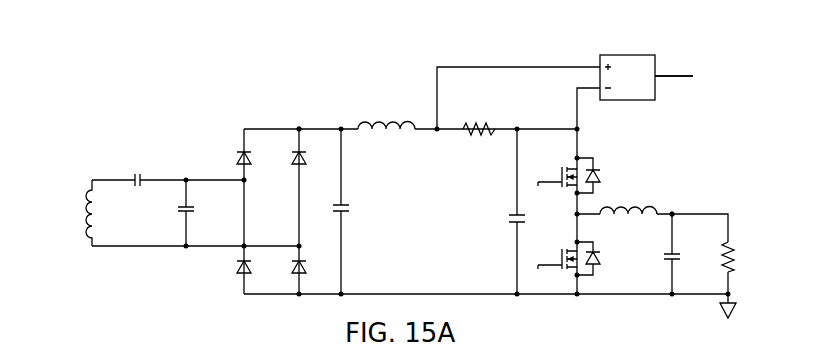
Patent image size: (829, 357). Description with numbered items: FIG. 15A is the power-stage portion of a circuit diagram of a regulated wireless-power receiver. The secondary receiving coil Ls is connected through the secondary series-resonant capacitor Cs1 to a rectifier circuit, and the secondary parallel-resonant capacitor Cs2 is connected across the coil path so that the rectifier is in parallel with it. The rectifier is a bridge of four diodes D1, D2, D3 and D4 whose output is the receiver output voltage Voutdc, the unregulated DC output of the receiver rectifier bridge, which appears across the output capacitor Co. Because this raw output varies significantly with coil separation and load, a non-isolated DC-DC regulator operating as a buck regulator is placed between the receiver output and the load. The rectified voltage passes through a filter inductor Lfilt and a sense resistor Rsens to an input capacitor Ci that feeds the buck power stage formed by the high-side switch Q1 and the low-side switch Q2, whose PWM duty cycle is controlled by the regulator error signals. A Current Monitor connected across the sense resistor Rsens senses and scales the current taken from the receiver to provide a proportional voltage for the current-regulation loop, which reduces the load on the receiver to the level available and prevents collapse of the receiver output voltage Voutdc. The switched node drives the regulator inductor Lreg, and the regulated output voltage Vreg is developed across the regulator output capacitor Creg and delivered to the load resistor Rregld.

The secondary receiving coil Ls is at (73, 213).
The secondary series-resonant capacitor Cs1 is at (136, 173).
The secondary parallel-resonant capacitor Cs2 is at (199, 213).
The rectifier diode D1 is at (229, 158).
The rectifier diode D2 is at (229, 267).
The rectifier diode D3 is at (309, 158).
The rectifier diode D4 is at (309, 267).
The receiver output voltage Voutdc is at (301, 122).
The output capacitor Co is at (348, 213).
The filter inductor Lfilt is at (386, 117).
The current sense resistor Rsens is at (476, 121).
The input capacitor Ci is at (504, 216).
The high-side switching transistor Q1 is at (578, 175).
The low-side switching transistor Q2 is at (578, 258).
The current monitor Current Monitor is at (627, 91).
The regulator inductor Lreg is at (628, 206).
The regulated output voltage node Vreg is at (694, 209).
The regulator output capacitor Creg is at (653, 249).
The regulator load resistor Rregld is at (749, 257).